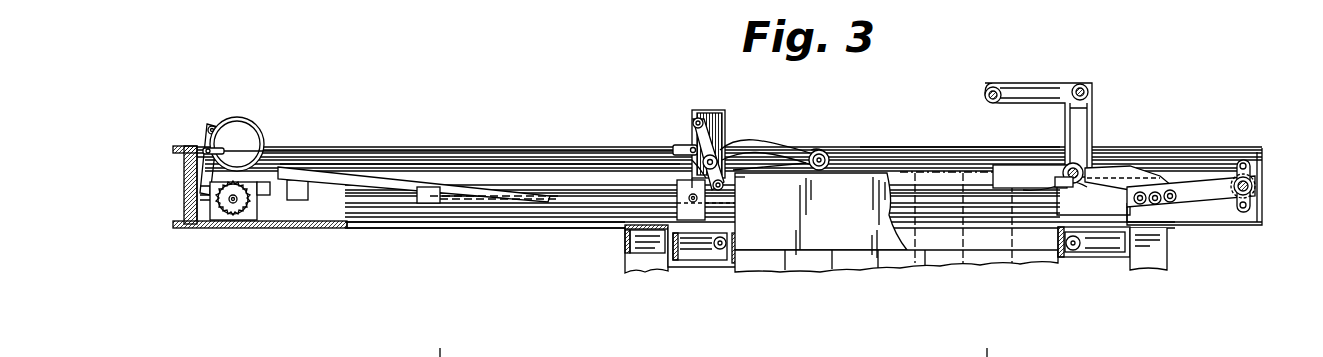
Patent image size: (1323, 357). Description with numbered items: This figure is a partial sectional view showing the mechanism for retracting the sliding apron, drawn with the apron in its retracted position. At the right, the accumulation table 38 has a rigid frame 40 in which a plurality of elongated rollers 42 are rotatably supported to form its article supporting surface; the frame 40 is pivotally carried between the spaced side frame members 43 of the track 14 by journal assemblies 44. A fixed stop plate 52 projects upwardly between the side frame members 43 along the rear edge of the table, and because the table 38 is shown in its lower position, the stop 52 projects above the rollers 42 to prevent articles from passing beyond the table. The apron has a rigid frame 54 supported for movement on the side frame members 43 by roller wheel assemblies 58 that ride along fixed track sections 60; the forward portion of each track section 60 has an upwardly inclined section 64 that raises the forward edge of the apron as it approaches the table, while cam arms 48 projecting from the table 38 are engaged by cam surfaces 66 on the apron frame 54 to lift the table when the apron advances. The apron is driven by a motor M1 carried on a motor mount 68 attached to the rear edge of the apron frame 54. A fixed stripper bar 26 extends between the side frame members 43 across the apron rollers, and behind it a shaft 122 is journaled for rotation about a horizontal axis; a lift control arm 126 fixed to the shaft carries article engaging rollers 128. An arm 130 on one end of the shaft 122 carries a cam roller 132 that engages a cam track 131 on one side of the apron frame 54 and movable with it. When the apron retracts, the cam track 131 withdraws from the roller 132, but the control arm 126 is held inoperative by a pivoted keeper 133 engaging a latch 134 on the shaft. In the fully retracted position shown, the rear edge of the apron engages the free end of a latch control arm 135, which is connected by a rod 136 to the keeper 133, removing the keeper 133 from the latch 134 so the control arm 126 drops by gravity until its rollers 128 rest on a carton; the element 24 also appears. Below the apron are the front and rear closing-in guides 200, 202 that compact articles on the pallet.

The motor M1 is at (256, 100).
The latch control arm 135 is at (190, 163).
The motor mount 68 is at (270, 185).
The cam track 131 is at (358, 166).
The rod 136 is at (446, 133).
The side frame members 43 is at (520, 133).
The drive cable 24 is at (554, 191).
The apron frame 54 is at (460, 216).
The track sections 60 is at (638, 194).
The keeper 133 is at (694, 128).
The latch 134 is at (696, 146).
The stripper bar 26 is at (714, 110).
The arm 130 is at (696, 162).
The shaft 122 is at (724, 166).
The lift control arm 126 is at (795, 152).
The article engaging rollers 128 is at (830, 153).
The track 14 is at (892, 149).
The cam roller 132 is at (735, 177).
The cam surfaces 66 is at (735, 202).
The roller wheel assemblies 58 is at (700, 213).
The rear closing-in guide 202 is at (730, 265).
The front closing-in guide 200 is at (1064, 260).
The upwardly inclined section 64 is at (1048, 190).
The stop plate 52 is at (1120, 190).
The cam arms 48 is at (1112, 172).
The rollers 42 is at (1172, 192).
The accumulation table 38 is at (1218, 164).
The journal assemblies 44 is at (1255, 205).
The frame 40 is at (1212, 205).